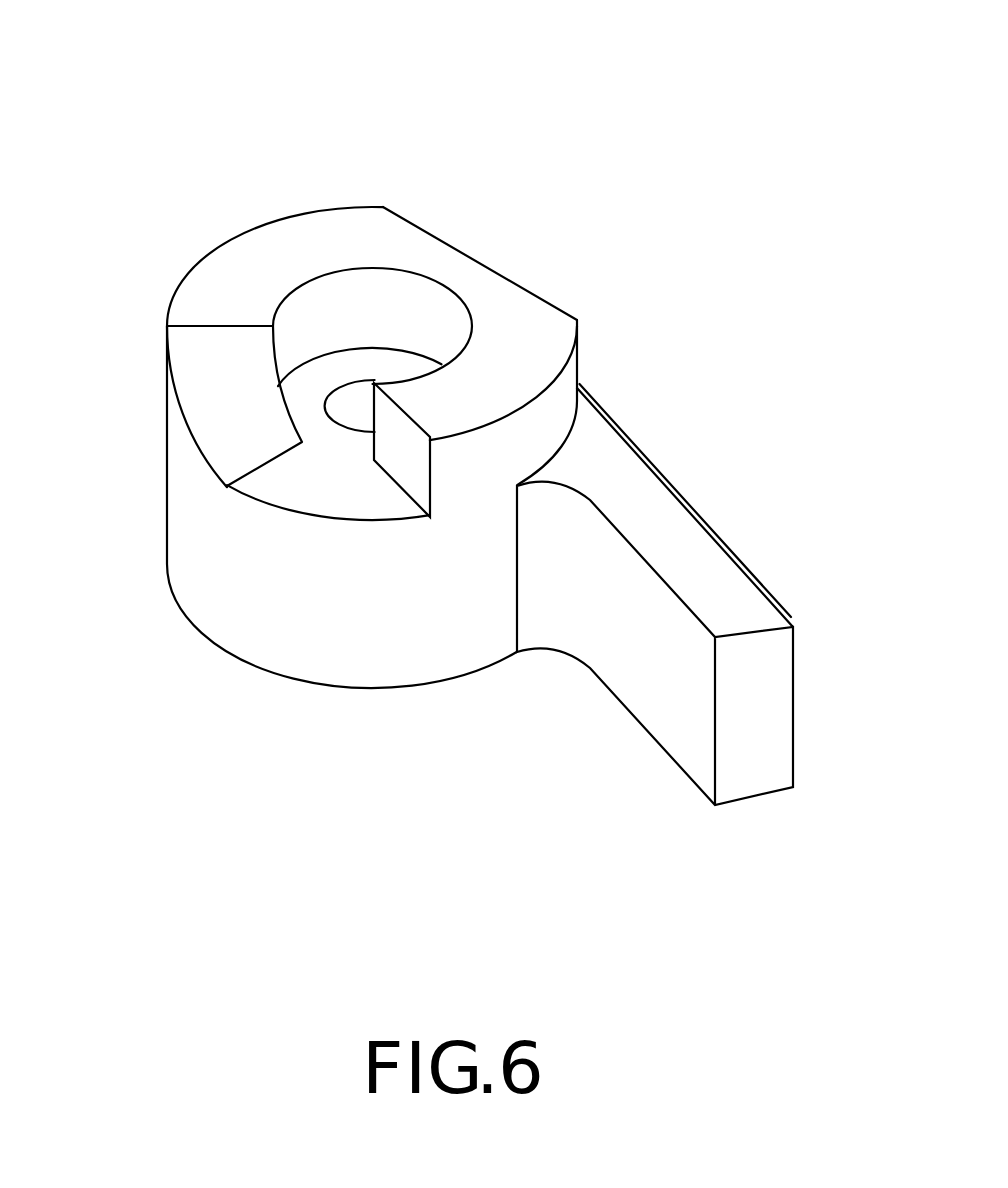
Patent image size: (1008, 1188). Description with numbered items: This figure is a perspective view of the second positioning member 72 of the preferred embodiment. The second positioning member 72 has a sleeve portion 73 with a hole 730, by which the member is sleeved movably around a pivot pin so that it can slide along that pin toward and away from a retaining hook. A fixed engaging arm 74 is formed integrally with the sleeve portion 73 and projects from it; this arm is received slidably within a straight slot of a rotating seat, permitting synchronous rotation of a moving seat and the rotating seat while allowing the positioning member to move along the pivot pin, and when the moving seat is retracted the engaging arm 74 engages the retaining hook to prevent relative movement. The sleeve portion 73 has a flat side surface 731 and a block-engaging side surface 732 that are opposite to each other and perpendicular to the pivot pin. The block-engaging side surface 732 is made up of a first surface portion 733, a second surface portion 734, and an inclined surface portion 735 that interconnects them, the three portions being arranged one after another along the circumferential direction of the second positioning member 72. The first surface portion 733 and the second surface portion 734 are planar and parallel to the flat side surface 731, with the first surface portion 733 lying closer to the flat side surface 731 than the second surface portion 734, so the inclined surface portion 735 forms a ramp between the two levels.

The second positioning member 72 is at (421, 200).
The sleeve portion 73 is at (281, 218).
The hole 730 is at (360, 402).
The flat side surface 731 is at (459, 680).
The block-engaging side surface 732 is at (350, 192).
The first surface portion 733 is at (377, 487).
The second surface portion 734 is at (228, 277).
The inclined surface portion 735 is at (210, 400).
The fixed engaging arm 74 is at (700, 518).